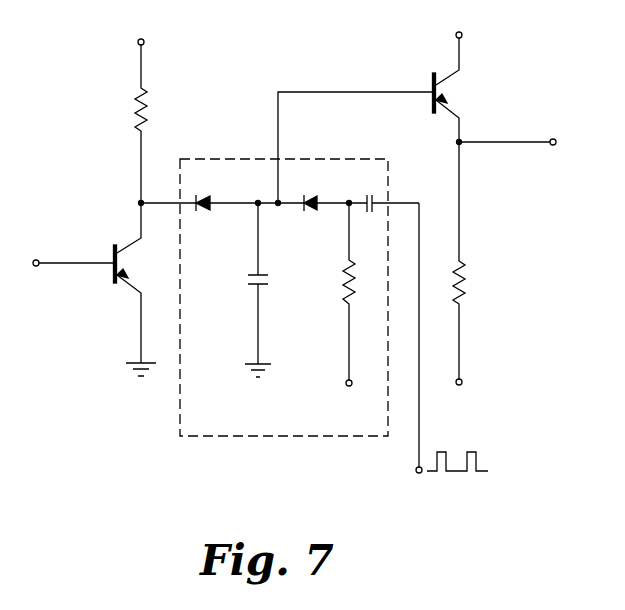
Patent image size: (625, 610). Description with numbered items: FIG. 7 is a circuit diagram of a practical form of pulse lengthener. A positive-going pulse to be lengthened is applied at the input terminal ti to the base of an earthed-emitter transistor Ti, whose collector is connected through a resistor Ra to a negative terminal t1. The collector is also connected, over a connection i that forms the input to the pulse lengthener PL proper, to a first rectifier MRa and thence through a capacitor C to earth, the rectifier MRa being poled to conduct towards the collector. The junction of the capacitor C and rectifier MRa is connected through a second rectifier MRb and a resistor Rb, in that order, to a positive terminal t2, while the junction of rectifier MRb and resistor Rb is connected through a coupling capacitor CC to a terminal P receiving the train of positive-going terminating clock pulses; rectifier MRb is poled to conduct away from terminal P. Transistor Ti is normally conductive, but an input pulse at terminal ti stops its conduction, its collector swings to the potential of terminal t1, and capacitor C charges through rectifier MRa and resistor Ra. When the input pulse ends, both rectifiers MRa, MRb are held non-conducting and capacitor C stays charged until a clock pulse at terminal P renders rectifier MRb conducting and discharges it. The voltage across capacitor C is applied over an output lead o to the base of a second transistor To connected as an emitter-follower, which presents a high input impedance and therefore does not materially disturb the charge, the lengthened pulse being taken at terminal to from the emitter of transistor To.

The negative terminal t1 is at (127, 53).
The resistor Ra is at (156, 144).
The connection i is at (160, 201).
The earthed-emitter transistor Ti is at (135, 289).
The input terminal ti is at (48, 298).
The pulse lengthener PL is at (190, 430).
The first rectifier MRa is at (205, 191).
The second rectifier MRb is at (312, 191).
The capacitor C is at (265, 290).
The output lead o is at (355, 136).
The resistor Rb is at (361, 291).
The positive terminal t2 is at (363, 395).
The coupling capacitor CC is at (387, 217).
The terminal P is at (448, 350).
The second transistor To is at (458, 209).
The output terminal to is at (559, 173).